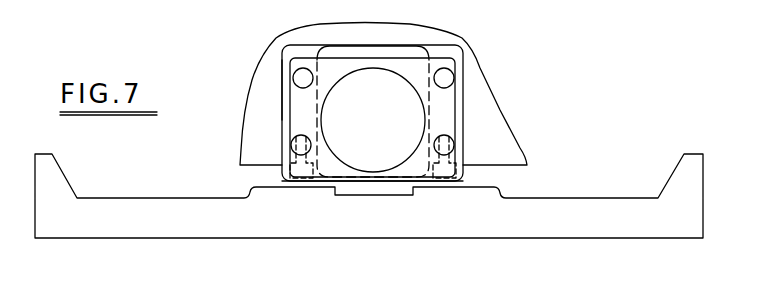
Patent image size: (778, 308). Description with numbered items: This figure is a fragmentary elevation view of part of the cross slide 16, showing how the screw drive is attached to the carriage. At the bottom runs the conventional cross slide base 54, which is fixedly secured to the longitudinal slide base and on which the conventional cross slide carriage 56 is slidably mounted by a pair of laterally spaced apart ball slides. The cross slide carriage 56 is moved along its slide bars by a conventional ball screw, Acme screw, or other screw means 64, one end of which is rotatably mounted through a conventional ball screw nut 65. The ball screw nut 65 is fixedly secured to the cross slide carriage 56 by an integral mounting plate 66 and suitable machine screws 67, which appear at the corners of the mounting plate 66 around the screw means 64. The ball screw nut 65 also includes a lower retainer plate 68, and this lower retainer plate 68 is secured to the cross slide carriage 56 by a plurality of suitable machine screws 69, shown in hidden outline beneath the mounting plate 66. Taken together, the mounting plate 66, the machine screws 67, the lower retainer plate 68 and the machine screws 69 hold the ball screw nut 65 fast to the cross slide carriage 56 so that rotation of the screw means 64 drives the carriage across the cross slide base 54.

The cross slide 16 is at (250, 60).
The cross slide base 54 is at (172, 226).
The cross slide carriage 56 is at (485, 106).
The screw means 64 is at (392, 117).
The ball screw nut 65 is at (407, 53).
The mounting plate 66 is at (462, 128).
The machine screws 67 is at (294, 78).
The lower retainer plate 68 is at (464, 176).
The machine screws 69 is at (305, 180).